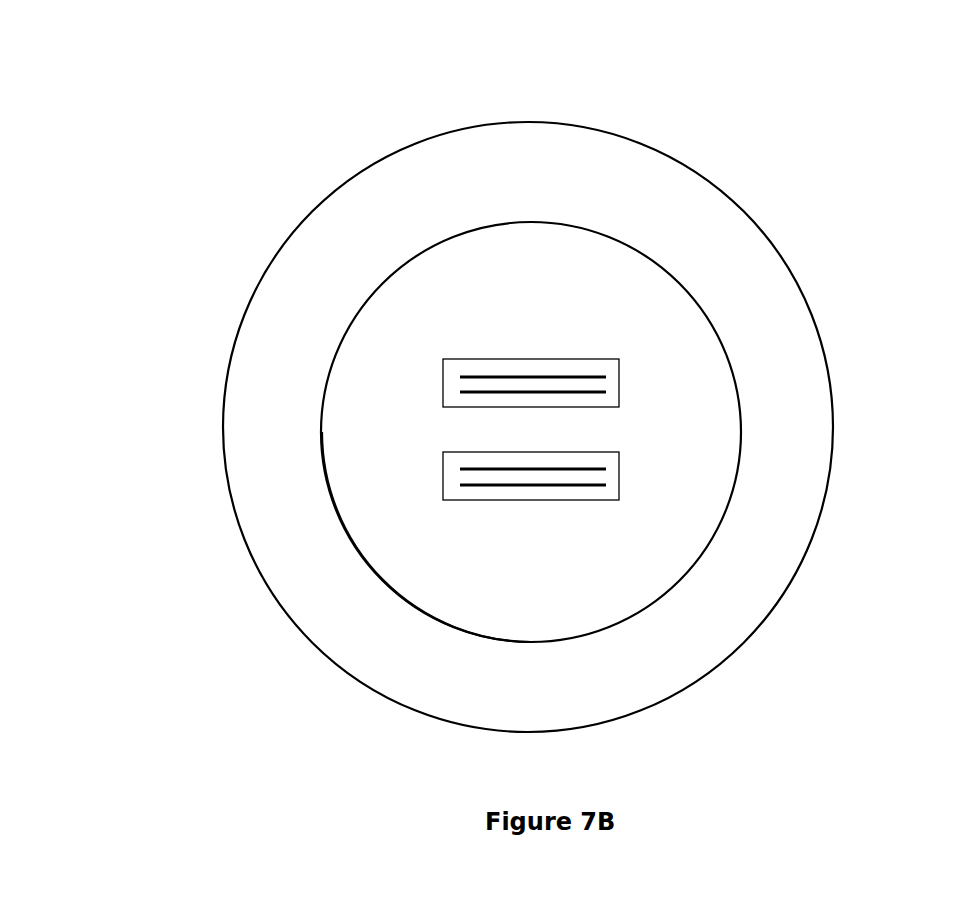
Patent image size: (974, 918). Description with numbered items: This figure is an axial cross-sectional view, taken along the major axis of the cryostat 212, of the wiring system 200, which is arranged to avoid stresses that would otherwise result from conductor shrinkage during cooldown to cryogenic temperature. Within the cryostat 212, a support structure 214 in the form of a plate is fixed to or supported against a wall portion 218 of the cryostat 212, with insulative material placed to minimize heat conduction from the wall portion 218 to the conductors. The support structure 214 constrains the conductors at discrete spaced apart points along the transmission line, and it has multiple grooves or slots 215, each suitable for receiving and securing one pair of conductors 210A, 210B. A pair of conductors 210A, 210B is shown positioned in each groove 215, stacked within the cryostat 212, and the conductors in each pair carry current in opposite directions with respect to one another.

The wiring system 200 is at (503, 390).
The cryostat 212 is at (780, 258).
The support structure 214 is at (598, 295).
The wall portion 218 is at (377, 573).
The grooves or slots 215 is at (619, 383).
The conductor 210A is at (512, 377).
The conductor 210B is at (463, 392).